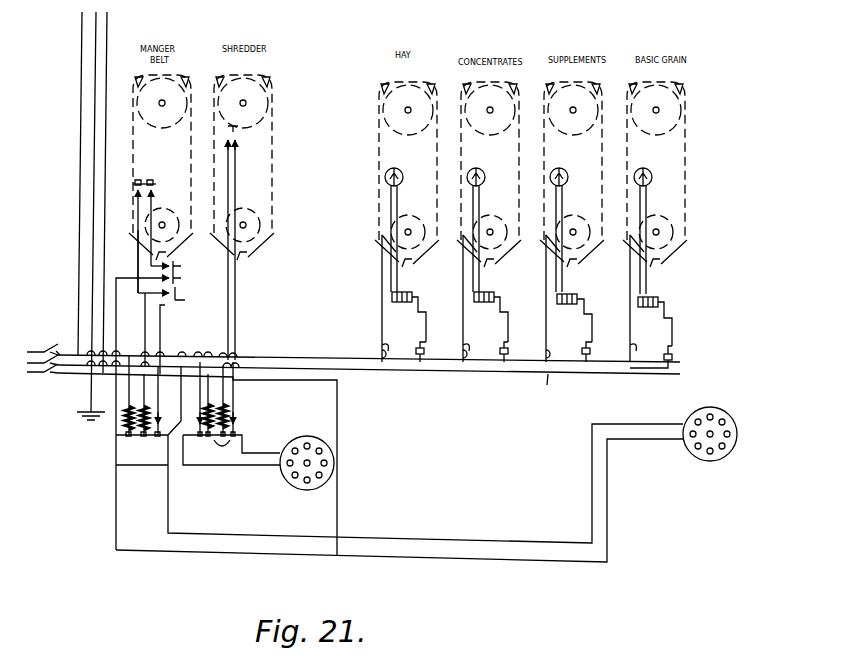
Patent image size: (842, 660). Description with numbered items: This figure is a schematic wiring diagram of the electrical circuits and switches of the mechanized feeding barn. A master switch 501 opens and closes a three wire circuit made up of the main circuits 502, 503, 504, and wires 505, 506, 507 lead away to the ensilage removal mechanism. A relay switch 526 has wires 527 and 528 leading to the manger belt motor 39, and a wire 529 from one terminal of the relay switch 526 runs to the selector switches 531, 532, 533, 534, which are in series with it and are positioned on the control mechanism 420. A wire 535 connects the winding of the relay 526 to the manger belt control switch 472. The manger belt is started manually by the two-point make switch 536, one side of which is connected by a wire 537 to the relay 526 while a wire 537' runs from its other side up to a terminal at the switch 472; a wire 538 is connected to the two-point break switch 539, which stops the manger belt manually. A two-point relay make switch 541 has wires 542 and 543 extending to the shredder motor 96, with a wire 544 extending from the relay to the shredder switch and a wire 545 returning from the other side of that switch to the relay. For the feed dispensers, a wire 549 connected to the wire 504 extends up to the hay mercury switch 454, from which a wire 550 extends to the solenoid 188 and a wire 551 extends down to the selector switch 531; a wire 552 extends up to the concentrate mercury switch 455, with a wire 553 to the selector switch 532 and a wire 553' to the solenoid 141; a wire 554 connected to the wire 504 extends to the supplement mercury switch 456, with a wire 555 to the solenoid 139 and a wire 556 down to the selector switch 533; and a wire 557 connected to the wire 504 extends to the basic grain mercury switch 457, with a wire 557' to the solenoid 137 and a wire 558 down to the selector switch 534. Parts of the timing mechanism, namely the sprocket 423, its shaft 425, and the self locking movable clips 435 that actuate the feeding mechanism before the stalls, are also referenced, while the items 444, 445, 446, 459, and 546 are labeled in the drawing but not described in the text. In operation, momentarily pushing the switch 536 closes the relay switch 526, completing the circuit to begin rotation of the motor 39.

The manger belt motor 39 is at (728, 456).
The shredder motor 96 is at (305, 491).
The solenoid 137 is at (660, 298).
The solenoid 139 is at (578, 297).
The solenoid 141 is at (496, 295).
The solenoid 188 is at (414, 296).
The control mechanism 420 is at (134, 151).
The sprocket 423 is at (188, 84).
The shaft 425 is at (254, 180).
The self locking movable clip 435 is at (706, 199).
The switch 444 is at (151, 172).
The feed bin 445 is at (437, 128).
The feed bin 446 is at (687, 137).
The hay mercury switch 454 is at (405, 260).
The concentrate mercury switch 455 is at (489, 222).
The supplement mercury switch 456 is at (572, 222).
The basic grain mercury switch 457 is at (655, 222).
The solenoid valve 459 is at (243, 235).
The manger belt control switch 472 is at (159, 189).
The master switch 501 is at (54, 375).
The main circuit 502 is at (70, 378).
The main circuit 503 is at (64, 350).
The main circuit 504 is at (89, 392).
The wire 505 is at (81, 76).
The wire 506 is at (94, 180).
The wire 507 is at (108, 30).
The relay switch 526 is at (143, 440).
The wire 527 is at (116, 518).
The wire 528 is at (168, 511).
The wire 529 is at (197, 357).
The selector switch 531 is at (426, 352).
The selector switch 532 is at (510, 352).
The selector switch 533 is at (592, 352).
The selector switch 534 is at (678, 356).
The wire 535 is at (145, 316).
The two-point make switch 536 is at (173, 292).
The wire 537 is at (173, 339).
The wire 537' is at (84, 252).
The wire 538 is at (116, 282).
The two-point break switch 539 is at (176, 278).
The two-point relay make switch 541 is at (238, 432).
The wire 542 is at (242, 447).
The wire 543 is at (234, 467).
The wire 544 is at (236, 284).
The wire 545 is at (236, 302).
The conductor 546 is at (159, 246).
The wire 549 is at (398, 338).
The wire 550 is at (397, 252).
The wire 551 is at (427, 313).
The wire 552 is at (482, 341).
The wire 553 is at (515, 319).
The wire 553' is at (501, 252).
The wire 554 is at (533, 387).
The wire 555 is at (561, 252).
The wire 556 is at (585, 314).
The wire 557 is at (647, 342).
The wire 557' is at (673, 252).
The wire 558 is at (673, 318).